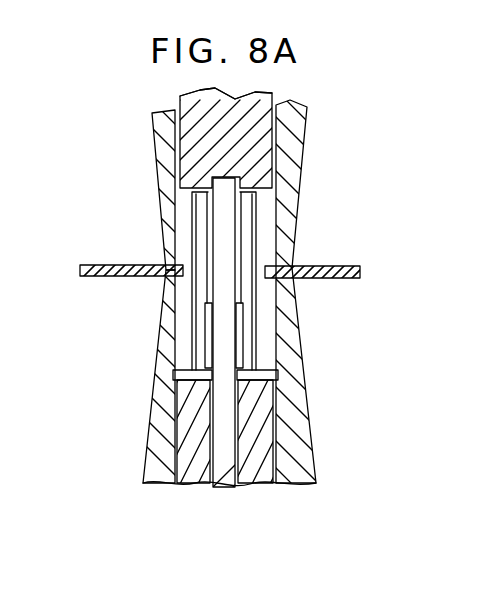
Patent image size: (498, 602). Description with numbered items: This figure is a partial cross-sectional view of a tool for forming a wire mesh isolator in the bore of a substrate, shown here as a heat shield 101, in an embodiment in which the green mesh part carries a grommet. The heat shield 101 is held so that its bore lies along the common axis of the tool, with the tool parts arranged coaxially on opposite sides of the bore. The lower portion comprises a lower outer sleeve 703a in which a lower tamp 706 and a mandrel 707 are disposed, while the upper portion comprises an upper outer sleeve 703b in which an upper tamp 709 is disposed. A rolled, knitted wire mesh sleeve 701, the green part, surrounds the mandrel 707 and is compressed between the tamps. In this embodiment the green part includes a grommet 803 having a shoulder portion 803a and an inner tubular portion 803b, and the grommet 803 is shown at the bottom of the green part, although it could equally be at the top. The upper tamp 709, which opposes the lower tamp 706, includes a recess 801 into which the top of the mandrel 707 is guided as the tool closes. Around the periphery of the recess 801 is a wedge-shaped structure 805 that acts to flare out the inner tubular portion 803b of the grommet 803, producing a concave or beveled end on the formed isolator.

The heat shield 101 is at (108, 280).
The wire mesh sleeve 701 is at (188, 242).
The lower outer sleeve 703a is at (148, 422).
The upper outer sleeve 703b is at (158, 192).
The lower tamp 706 is at (258, 487).
The mandrel 707 is at (223, 487).
The upper tamp 709 is at (182, 85).
The recess 801 is at (277, 101).
The grommet 803 is at (278, 378).
The shoulder portion 803a is at (262, 360).
The inner tubular portion 803b is at (263, 328).
The wedge-shaped structure 805 is at (282, 160).